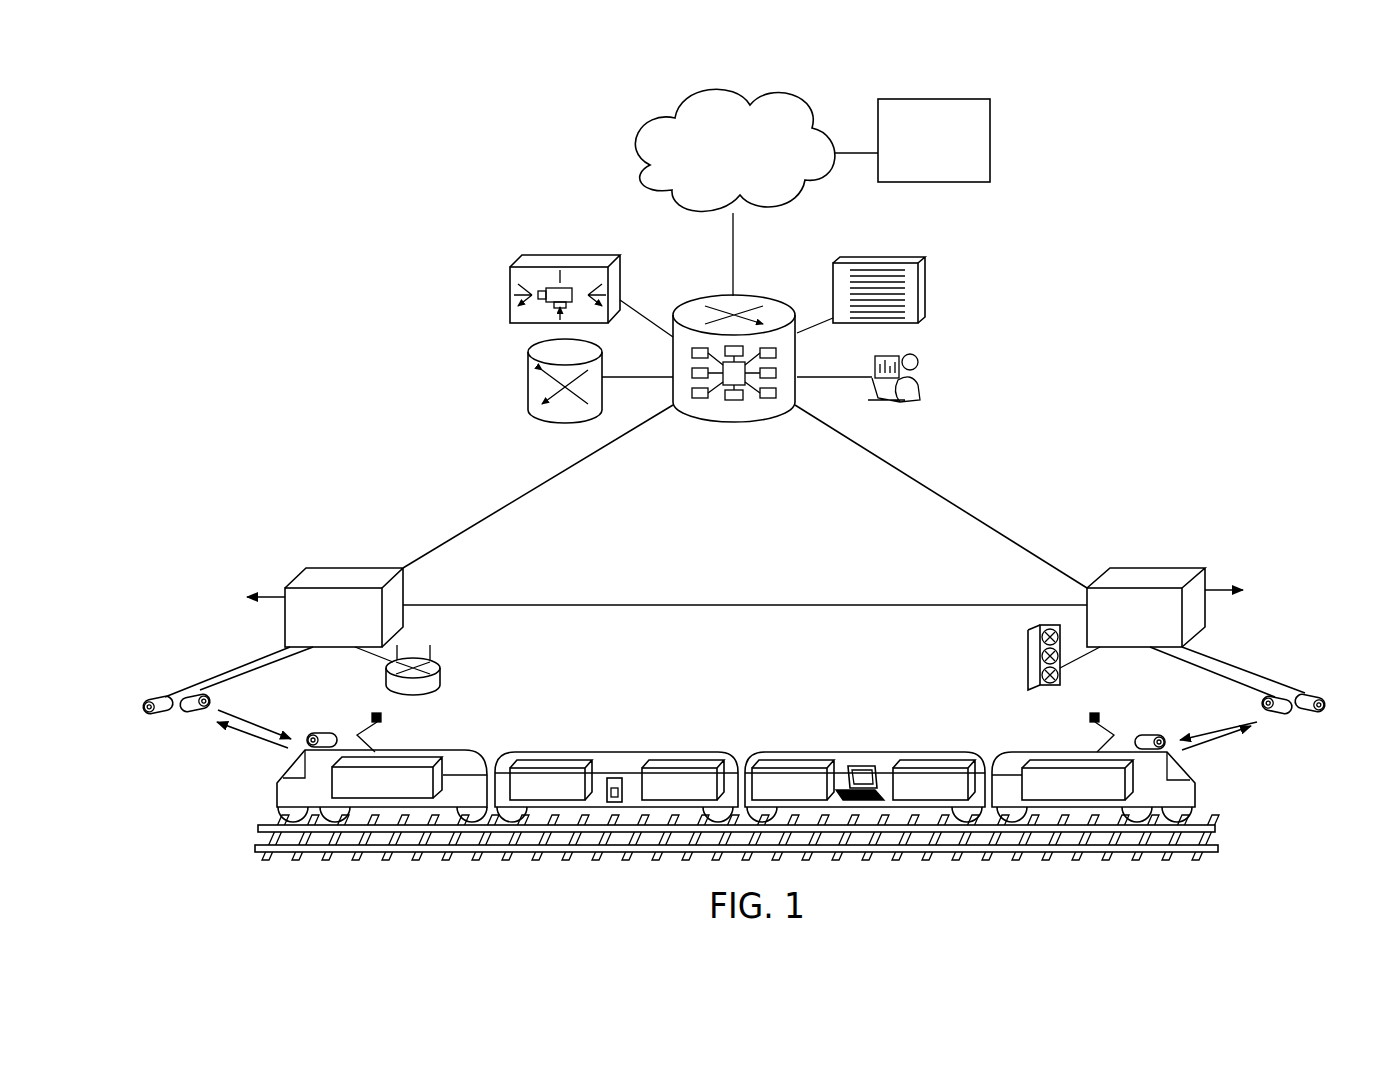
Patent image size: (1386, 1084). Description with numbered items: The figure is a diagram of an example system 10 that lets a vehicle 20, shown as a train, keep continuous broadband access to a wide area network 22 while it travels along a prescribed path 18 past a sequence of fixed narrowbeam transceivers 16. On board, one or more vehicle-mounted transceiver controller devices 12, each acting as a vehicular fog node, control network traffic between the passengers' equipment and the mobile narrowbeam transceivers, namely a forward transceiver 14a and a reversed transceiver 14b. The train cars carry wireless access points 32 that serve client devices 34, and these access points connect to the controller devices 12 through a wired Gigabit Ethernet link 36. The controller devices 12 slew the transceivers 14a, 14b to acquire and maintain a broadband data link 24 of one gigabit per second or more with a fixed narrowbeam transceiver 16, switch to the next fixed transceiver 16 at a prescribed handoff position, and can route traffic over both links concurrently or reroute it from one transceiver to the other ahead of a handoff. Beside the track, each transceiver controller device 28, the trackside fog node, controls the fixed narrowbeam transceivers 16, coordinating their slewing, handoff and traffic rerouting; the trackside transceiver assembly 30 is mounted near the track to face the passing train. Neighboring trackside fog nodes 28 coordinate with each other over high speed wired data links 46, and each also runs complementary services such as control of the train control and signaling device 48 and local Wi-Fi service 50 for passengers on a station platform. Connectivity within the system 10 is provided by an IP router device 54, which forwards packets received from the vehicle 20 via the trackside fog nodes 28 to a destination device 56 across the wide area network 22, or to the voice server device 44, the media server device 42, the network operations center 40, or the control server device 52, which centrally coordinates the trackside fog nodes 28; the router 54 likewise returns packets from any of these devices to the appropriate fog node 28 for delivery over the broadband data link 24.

The system 10 is at (366, 240).
The vehicle-mounted transceiver controller device 12 is at (407, 758).
The forward transceiver 14a is at (1145, 735).
The reversed transceiver 14b is at (327, 733).
The fixed narrowbeam transceiver 16 is at (191, 712).
The prescribed path 18 is at (1215, 839).
The vehicle 20 is at (767, 766).
The wide area network 22 is at (690, 218).
The broadband data link 24 is at (227, 732).
The transceiver controller device 28 is at (327, 567).
The trackside optical transceiver assembly 30 is at (734, 694).
The wireless access point 32 is at (545, 760).
The client device 34 is at (613, 776).
The wired Gigabit Ethernet link 36 is at (460, 752).
The network operations center 40 is at (925, 385).
The media server device 42 is at (586, 255).
The voice server device 44 is at (541, 422).
The high speed wired data link 46 is at (491, 519).
The train control and signaling device 48 is at (1028, 630).
The local Wi-Fi service 50 is at (442, 672).
The control server device 52 is at (925, 275).
The router device 54 is at (718, 425).
The destination device 56 is at (990, 150).